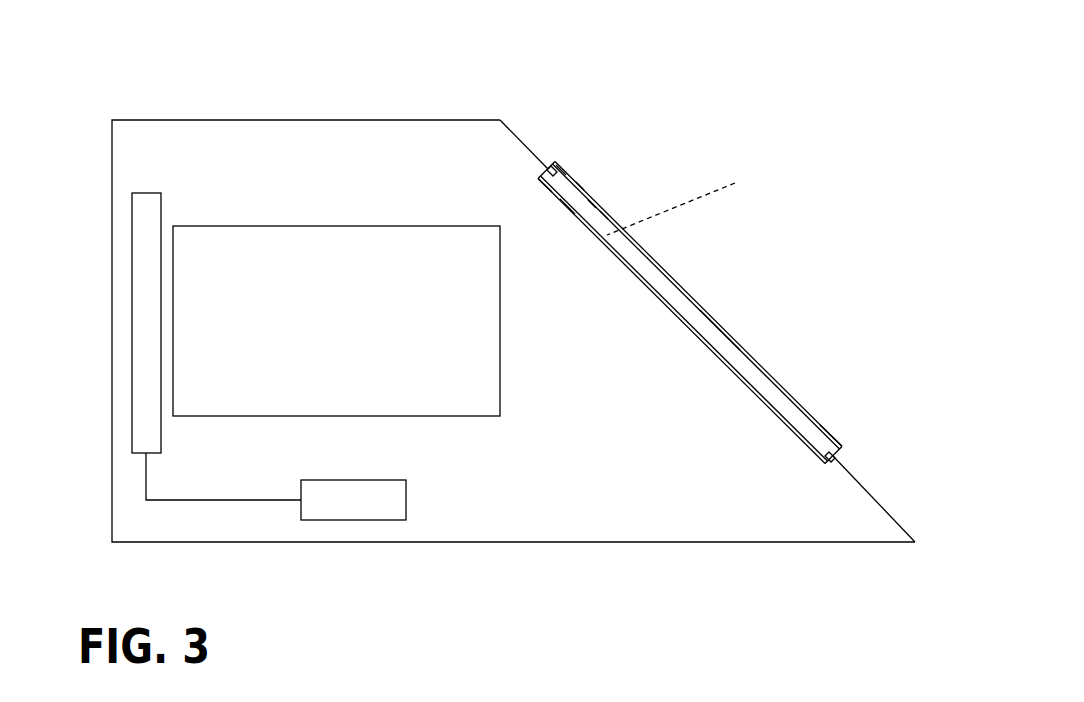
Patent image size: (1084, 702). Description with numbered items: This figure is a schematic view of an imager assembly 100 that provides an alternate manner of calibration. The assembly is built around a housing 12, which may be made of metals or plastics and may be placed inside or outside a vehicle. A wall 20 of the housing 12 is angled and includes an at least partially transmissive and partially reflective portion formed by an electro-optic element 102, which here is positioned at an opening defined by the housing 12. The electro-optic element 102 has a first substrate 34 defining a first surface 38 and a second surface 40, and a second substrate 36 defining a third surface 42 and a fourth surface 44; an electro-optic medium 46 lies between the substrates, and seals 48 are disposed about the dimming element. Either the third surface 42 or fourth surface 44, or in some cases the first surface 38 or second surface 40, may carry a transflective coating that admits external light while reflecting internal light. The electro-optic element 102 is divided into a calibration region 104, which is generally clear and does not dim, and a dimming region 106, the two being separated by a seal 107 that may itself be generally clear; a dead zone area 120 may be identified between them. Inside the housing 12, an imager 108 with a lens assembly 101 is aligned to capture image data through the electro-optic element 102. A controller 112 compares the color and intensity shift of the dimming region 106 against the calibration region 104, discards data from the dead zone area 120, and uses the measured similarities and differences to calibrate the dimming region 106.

The housing 12 is at (270, 118).
The wall 20 is at (892, 515).
The first substrate 34 is at (800, 437).
The second substrate 36 is at (833, 438).
The first surface 38 is at (565, 204).
The second surface 40 is at (540, 182).
The third surface 42 is at (554, 170).
The fourth surface 44 is at (580, 188).
The electro-optic medium 46 is at (732, 347).
The seals 48 is at (552, 165).
The imager assembly 100 is at (575, 82).
The lens assembly 101 is at (203, 312).
The electro-optic element 102 is at (768, 380).
The calibration region 104 is at (595, 206).
The dimming region 106 is at (752, 375).
The seal 107 is at (606, 216).
The imager 108 is at (143, 372).
The controller 112 is at (370, 508).
The dead zone area 120 is at (696, 204).